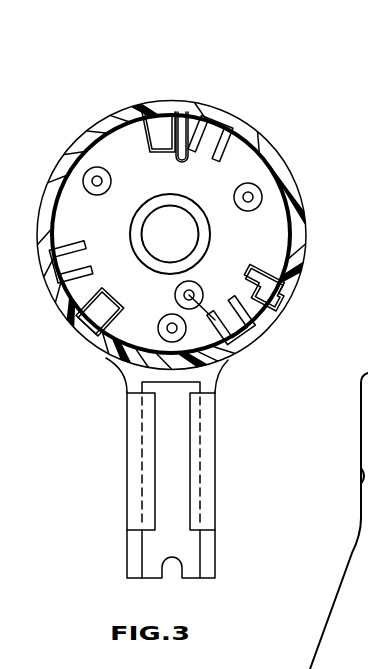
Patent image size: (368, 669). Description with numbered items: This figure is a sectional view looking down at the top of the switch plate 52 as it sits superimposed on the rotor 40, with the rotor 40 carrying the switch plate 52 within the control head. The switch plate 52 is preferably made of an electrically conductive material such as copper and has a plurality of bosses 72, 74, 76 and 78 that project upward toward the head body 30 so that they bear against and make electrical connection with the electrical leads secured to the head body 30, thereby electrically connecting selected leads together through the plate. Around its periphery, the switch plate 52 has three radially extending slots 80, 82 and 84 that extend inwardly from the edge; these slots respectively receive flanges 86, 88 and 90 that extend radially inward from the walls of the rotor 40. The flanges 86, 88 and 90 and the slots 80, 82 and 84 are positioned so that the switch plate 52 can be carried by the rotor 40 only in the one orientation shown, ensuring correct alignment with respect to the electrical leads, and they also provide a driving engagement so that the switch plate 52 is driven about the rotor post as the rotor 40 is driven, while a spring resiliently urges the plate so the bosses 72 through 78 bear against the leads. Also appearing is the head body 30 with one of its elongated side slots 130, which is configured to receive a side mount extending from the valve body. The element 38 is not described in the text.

The head body 30 is at (367, 576).
The stem 38 is at (205, 446).
The rotor 40 is at (211, 112).
The switch plate 52 is at (252, 165).
The boss 72 is at (97, 181).
The boss 74 is at (262, 199).
The boss 76 is at (238, 326).
The boss 78 is at (172, 328).
The radially extending slot 80 is at (191, 116).
The radially extending slot 82 is at (280, 256).
The radially extending slot 84 is at (105, 356).
The flange 86 is at (163, 130).
The flange 88 is at (262, 282).
The flange 90 is at (78, 327).
The elongated side slot 130 is at (361, 424).